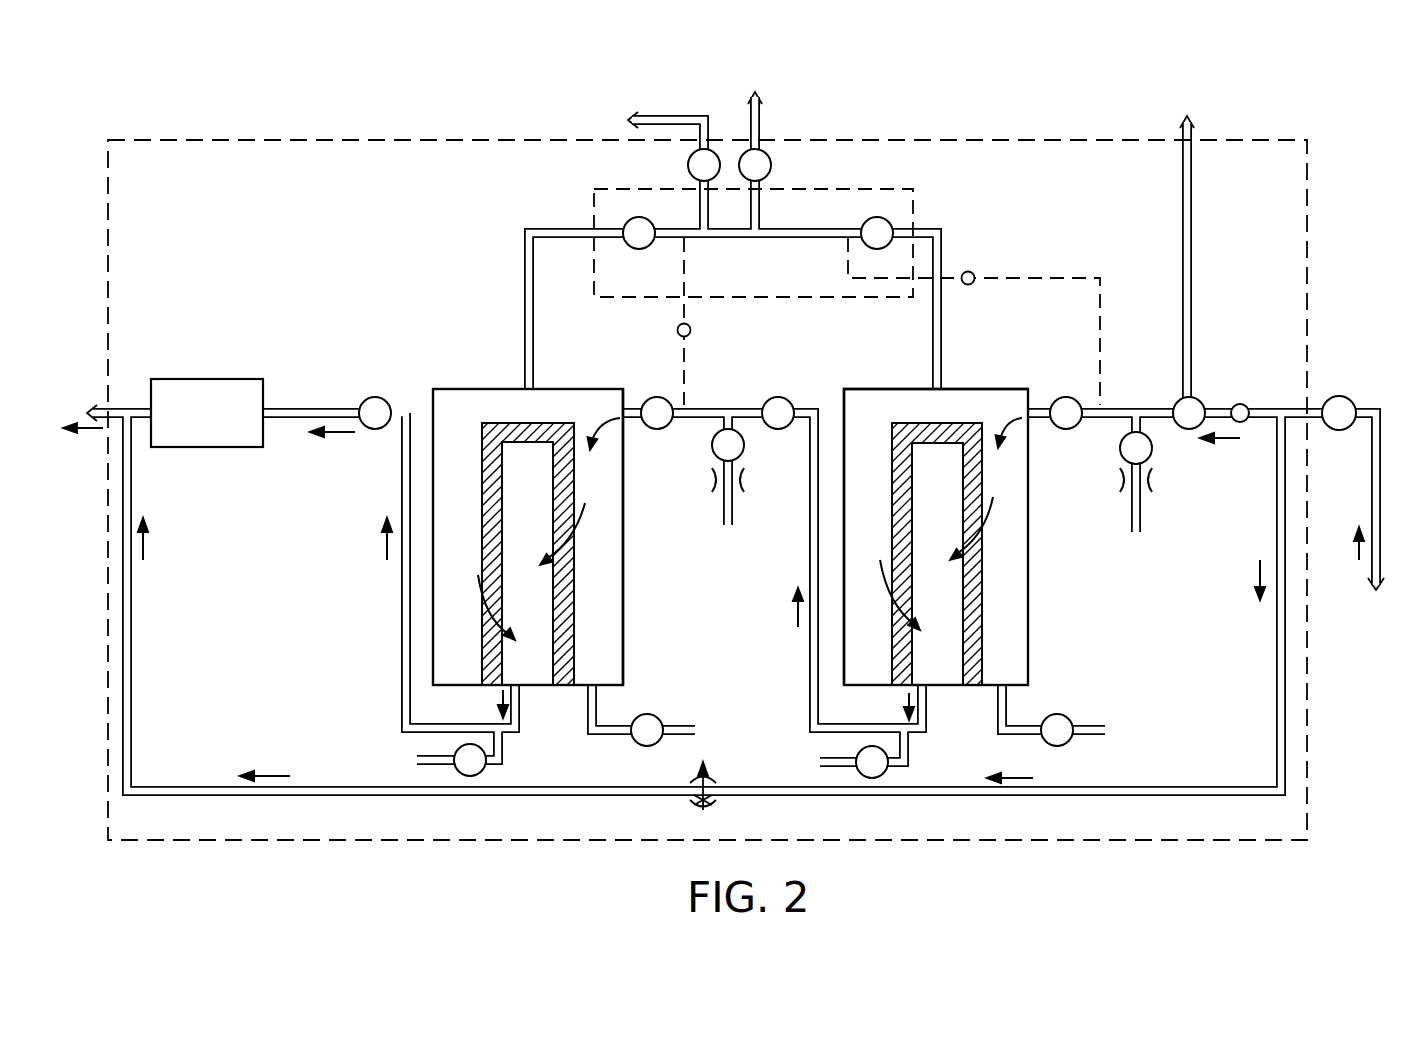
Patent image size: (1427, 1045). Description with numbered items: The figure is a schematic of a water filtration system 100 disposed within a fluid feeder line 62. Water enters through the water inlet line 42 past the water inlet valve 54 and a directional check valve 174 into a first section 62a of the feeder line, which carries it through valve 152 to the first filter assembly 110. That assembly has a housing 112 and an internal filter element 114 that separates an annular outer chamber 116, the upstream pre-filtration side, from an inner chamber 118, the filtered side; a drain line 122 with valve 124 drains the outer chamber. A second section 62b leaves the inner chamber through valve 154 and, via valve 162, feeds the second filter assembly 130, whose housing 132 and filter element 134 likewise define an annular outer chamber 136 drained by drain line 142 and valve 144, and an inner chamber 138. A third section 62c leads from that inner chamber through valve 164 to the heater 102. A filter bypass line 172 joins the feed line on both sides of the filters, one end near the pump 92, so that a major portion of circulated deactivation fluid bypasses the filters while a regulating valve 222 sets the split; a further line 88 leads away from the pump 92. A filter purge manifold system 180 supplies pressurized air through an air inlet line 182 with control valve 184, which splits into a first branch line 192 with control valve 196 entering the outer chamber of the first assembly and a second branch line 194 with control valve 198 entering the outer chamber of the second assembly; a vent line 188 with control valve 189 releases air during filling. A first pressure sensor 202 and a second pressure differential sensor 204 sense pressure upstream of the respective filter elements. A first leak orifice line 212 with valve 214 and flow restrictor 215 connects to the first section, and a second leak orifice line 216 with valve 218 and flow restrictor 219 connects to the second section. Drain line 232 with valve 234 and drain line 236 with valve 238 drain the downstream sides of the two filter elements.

The water filtration system 100 is at (404, 126).
The heater 102 is at (222, 378).
The first filter assembly 110 is at (937, 493).
The housing 112 is at (877, 387).
The filter element 114 is at (975, 583).
The annular outer chamber 116 is at (1005, 618).
The inner chamber 118 is at (945, 632).
The drain line 122 is at (997, 710).
The valve 124 is at (1072, 745).
The second filter assembly 130 is at (527, 483).
The housing 132 is at (623, 585).
The filter element 134 is at (565, 600).
The annular outer chamber 136 is at (600, 640).
The inner chamber 138 is at (522, 450).
The drain line 142 is at (580, 720).
The valve 144 is at (636, 745).
The valve 152 is at (1063, 398).
The valve 154 is at (776, 398).
The valve 162 is at (648, 397).
The valve 164 is at (367, 432).
The filter bypass line 172 is at (132, 725).
The directional check valve 174 is at (1250, 408).
The filter purge manifold system 180 is at (925, 188).
The air inlet line 182 is at (748, 107).
The control valve 184 is at (772, 165).
The vent line 188 is at (660, 112).
The control valve 189 is at (687, 165).
The first branch line 192 is at (787, 238).
The second branch line 194 is at (692, 238).
The control valve 196 is at (893, 222).
The control valve 198 is at (627, 226).
The first pressure sensor 202 is at (975, 271).
The second pressure differential sensor 204 is at (676, 330).
The first leak orifice line 212 is at (1141, 503).
The valve 214 is at (1153, 452).
The flow restrictor 215 is at (1115, 489).
The second leak orifice line 216 is at (735, 505).
The valve 218 is at (712, 450).
The flow restrictor 219 is at (738, 478).
The regulating valve 222 is at (712, 800).
The drain line 232 is at (895, 770).
The valve 234 is at (860, 778).
The drain line 236 is at (455, 775).
The valve 238 is at (490, 770).
The water inlet line 42 is at (1192, 228).
The water inlet valve 54 is at (1200, 402).
The fluid feeder line 62 is at (115, 408).
The first section 62a is at (1090, 423).
The second section 62b is at (812, 655).
The third section 62c is at (400, 614).
The outlet line 88 is at (1372, 575).
The pump 92 is at (1350, 398).